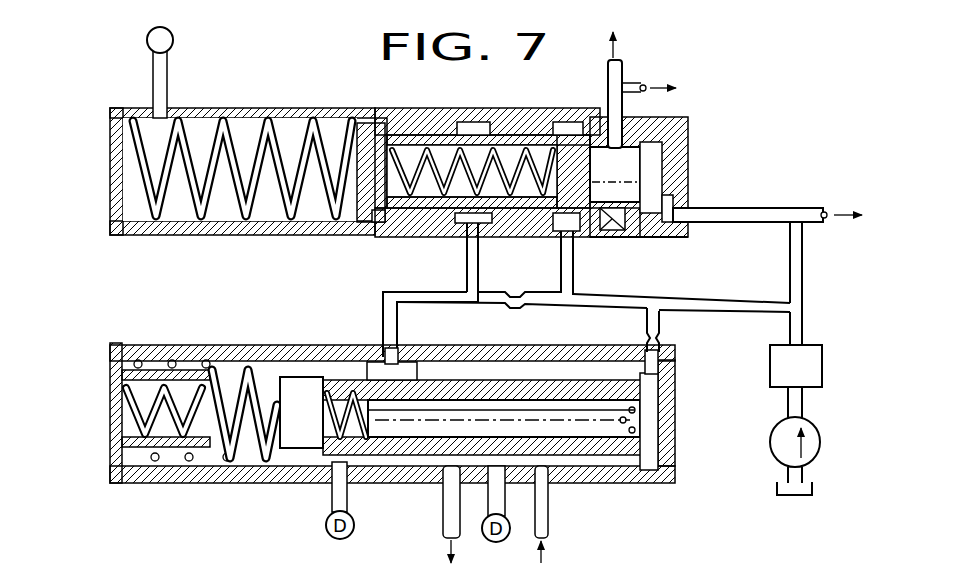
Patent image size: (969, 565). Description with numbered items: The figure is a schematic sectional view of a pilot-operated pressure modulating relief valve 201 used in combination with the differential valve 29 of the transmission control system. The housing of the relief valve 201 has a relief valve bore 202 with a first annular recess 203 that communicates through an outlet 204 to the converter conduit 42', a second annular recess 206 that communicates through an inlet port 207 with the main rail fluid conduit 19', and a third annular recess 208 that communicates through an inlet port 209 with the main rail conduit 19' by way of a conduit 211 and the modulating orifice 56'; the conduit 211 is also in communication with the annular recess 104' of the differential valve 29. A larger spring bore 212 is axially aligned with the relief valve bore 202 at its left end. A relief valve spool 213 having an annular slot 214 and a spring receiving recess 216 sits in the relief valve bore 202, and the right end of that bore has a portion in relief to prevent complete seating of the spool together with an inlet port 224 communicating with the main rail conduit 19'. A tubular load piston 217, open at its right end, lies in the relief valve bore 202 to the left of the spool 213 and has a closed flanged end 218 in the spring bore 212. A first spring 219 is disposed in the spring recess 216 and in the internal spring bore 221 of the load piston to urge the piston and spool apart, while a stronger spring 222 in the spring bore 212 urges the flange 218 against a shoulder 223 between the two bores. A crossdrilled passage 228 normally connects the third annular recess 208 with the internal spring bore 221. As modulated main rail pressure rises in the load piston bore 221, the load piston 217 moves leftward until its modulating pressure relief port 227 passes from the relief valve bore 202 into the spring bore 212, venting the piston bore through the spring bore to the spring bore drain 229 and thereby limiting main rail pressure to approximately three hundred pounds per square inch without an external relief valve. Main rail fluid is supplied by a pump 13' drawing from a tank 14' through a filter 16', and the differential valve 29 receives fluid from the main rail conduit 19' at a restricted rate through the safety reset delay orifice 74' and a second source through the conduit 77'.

The pilot-operated pressure modulating relief valve 201 is at (108, 142).
The spring bore drain 229 is at (174, 44).
The stronger spring 222 is at (234, 106).
The spring bore 212 is at (222, 222).
The shoulder 223 is at (356, 232).
The internal spring bore 221 is at (392, 224).
The flanged end 218 is at (368, 107).
The tubular load piston 217 is at (414, 110).
The modulating pressure relief port 227 is at (432, 122).
The crossdrilled passage 228 is at (486, 134).
The first spring 219 is at (531, 122).
The inlet port 209 is at (488, 228).
The first annular recess 203 is at (626, 132).
The relief valve spool 213 is at (628, 173).
The spring receiving recess 216 is at (628, 199).
The annular slot 214 is at (645, 150).
The outlet 204 is at (610, 118).
The converter conduit 42' is at (649, 72).
The inlet port 224 is at (690, 208).
The second annular recess 206 is at (582, 236).
The relief valve bore 202 is at (633, 238).
The third annular recess 208 is at (466, 235).
The inlet port 207 is at (560, 250).
The conduit 211 is at (467, 272).
The modulating orifice 56' is at (593, 315).
The main rail fluid conduit 19' is at (775, 283).
The differential valve 29 is at (108, 378).
The annular recess 104' is at (373, 353).
The safety reset delay orifice 74' is at (672, 389).
The conduit 77' is at (564, 514).
The filter 16' is at (778, 381).
The pump 13' is at (775, 450).
The tank 14' is at (773, 494).